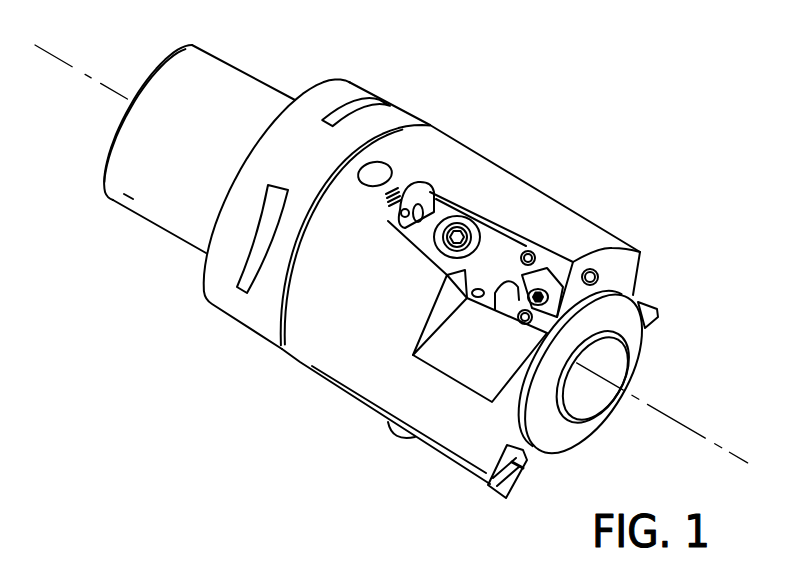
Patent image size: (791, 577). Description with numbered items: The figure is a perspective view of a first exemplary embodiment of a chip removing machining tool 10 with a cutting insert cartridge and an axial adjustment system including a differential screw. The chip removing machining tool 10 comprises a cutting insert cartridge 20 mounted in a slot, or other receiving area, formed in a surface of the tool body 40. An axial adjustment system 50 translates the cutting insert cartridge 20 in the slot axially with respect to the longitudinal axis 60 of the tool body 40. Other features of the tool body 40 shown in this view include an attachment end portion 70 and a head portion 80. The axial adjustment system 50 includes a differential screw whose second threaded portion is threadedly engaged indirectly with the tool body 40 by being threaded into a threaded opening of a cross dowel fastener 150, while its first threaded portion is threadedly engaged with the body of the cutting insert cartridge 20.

The chip removing machining tool 10 is at (472, 557).
The cutting insert cartridge 20 is at (497, 250).
The tool body 40 is at (366, 303).
The axial adjustment system 50 is at (426, 179).
The longitudinal axis 60 is at (677, 417).
The attachment end portion 70 is at (140, 262).
The head portion 80 is at (343, 409).
The cross dowel fastener 150 is at (374, 175).